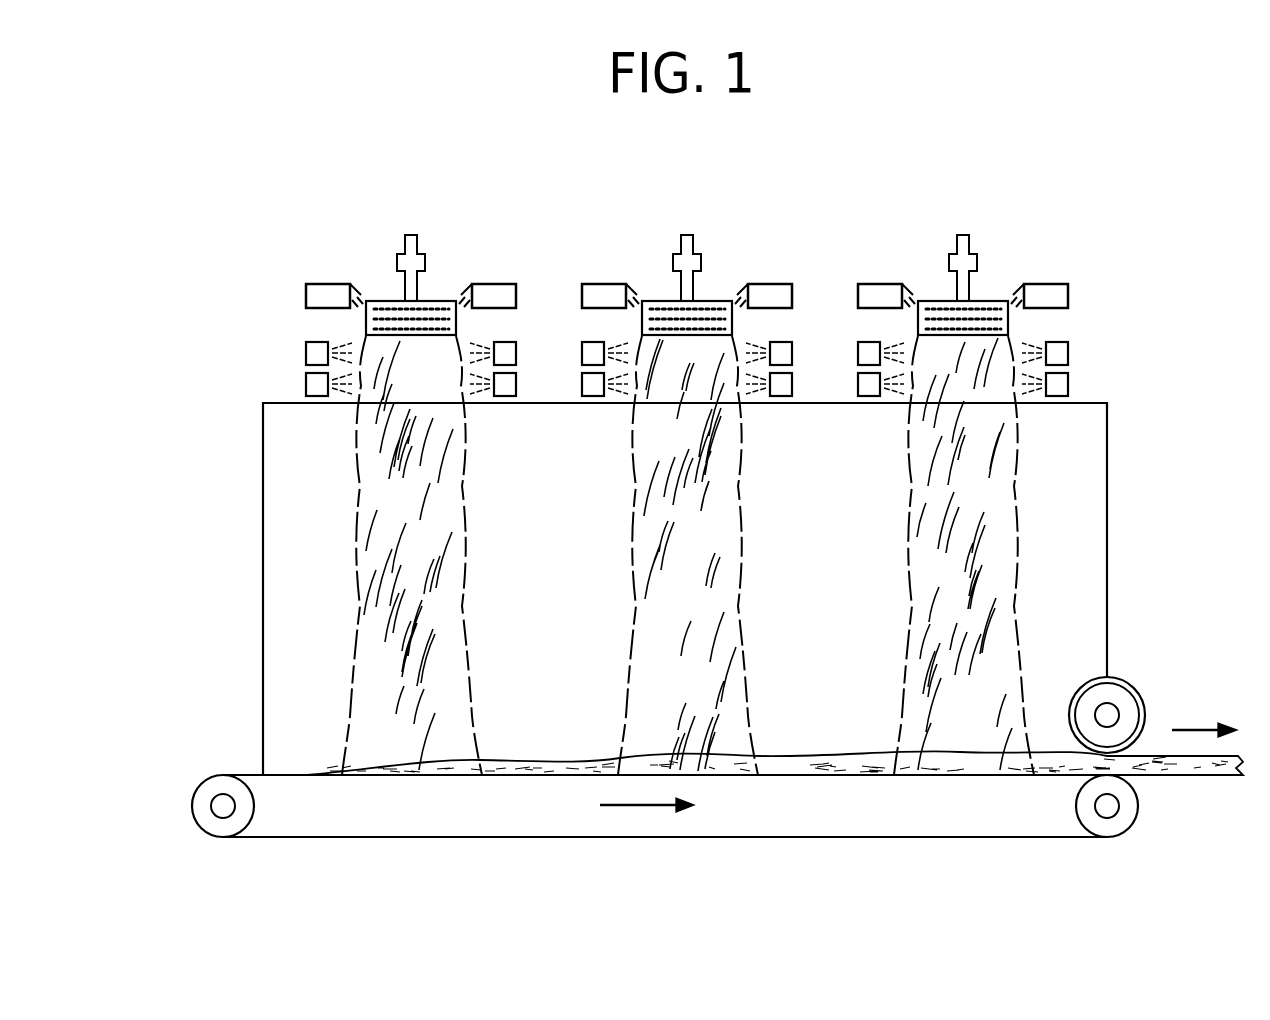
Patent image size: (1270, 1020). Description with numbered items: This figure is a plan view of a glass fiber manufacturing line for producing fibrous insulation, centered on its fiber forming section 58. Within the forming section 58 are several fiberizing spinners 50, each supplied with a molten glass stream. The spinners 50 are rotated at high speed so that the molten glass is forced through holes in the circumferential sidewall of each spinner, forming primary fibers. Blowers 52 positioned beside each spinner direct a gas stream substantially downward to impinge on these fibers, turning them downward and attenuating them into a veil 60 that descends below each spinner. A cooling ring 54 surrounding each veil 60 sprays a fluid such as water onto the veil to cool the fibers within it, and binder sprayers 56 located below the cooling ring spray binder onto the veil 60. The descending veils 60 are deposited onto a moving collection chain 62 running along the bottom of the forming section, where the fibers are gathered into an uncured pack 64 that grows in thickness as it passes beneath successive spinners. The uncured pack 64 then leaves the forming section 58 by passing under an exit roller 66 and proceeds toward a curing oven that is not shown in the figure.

The fiberizing spinner 50 is at (438, 300).
The blower 52 is at (330, 283).
The cooling ring 54 is at (305, 353).
The binder sprayer 56 is at (305, 388).
The fiber forming section 58 is at (240, 519).
The veil 60 is at (453, 551).
The collection chain 62 is at (240, 776).
The uncured pack 64 is at (798, 756).
The exit roller 66 is at (1121, 679).